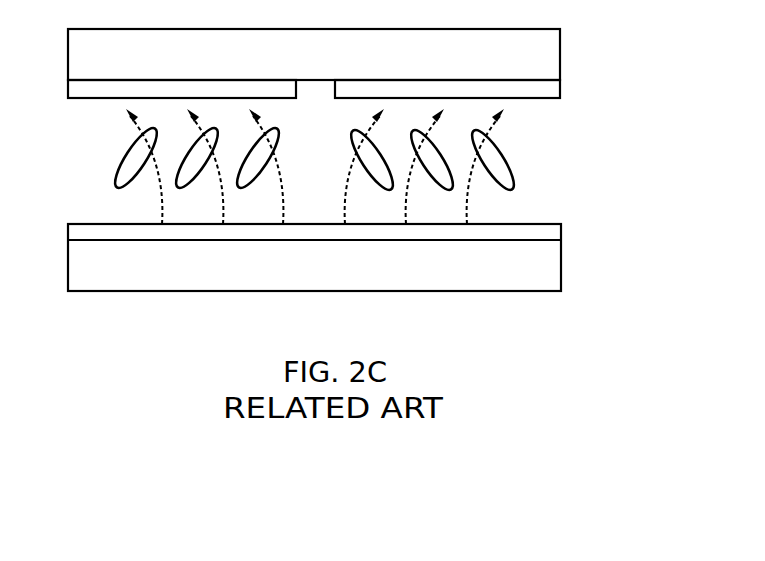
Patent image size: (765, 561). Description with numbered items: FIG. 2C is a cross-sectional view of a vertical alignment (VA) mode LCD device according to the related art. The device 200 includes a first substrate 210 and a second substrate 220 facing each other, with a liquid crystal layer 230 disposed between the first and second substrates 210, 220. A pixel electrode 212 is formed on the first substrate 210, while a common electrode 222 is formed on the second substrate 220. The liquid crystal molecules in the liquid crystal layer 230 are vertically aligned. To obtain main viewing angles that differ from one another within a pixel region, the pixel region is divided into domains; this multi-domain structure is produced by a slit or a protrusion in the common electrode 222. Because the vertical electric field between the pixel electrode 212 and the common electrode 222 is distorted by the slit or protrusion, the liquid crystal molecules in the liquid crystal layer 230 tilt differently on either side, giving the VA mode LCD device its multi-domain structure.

The light path / liquid crystal display 200 is at (346, 212).
The first substrate 210 is at (549, 277).
The pixel electrode 212 is at (558, 233).
The second substrate 220 is at (549, 68).
The common electrode 222 is at (553, 90).
The liquid crystal layer 230 is at (570, 100).